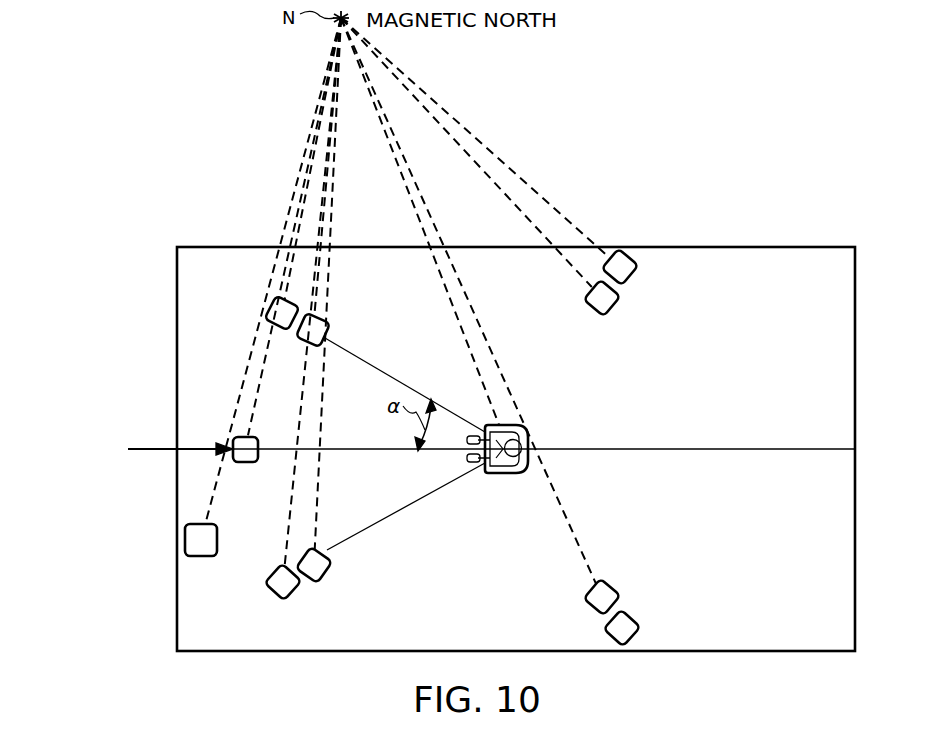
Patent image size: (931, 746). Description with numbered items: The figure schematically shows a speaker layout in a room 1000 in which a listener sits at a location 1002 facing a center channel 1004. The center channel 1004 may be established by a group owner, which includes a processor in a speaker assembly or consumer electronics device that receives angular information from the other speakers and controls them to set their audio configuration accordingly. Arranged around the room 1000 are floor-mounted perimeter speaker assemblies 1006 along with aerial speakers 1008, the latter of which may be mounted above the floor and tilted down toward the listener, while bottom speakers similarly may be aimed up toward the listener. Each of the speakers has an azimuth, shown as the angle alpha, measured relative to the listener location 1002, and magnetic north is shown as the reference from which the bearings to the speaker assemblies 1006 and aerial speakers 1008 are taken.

The room 1000 is at (749, 247).
The listener location 1002 is at (506, 475).
The center channel 1004 is at (234, 441).
The floor-mounted perimeter speaker assembly 1006 is at (272, 594).
The aerial speaker 1008 is at (320, 580).